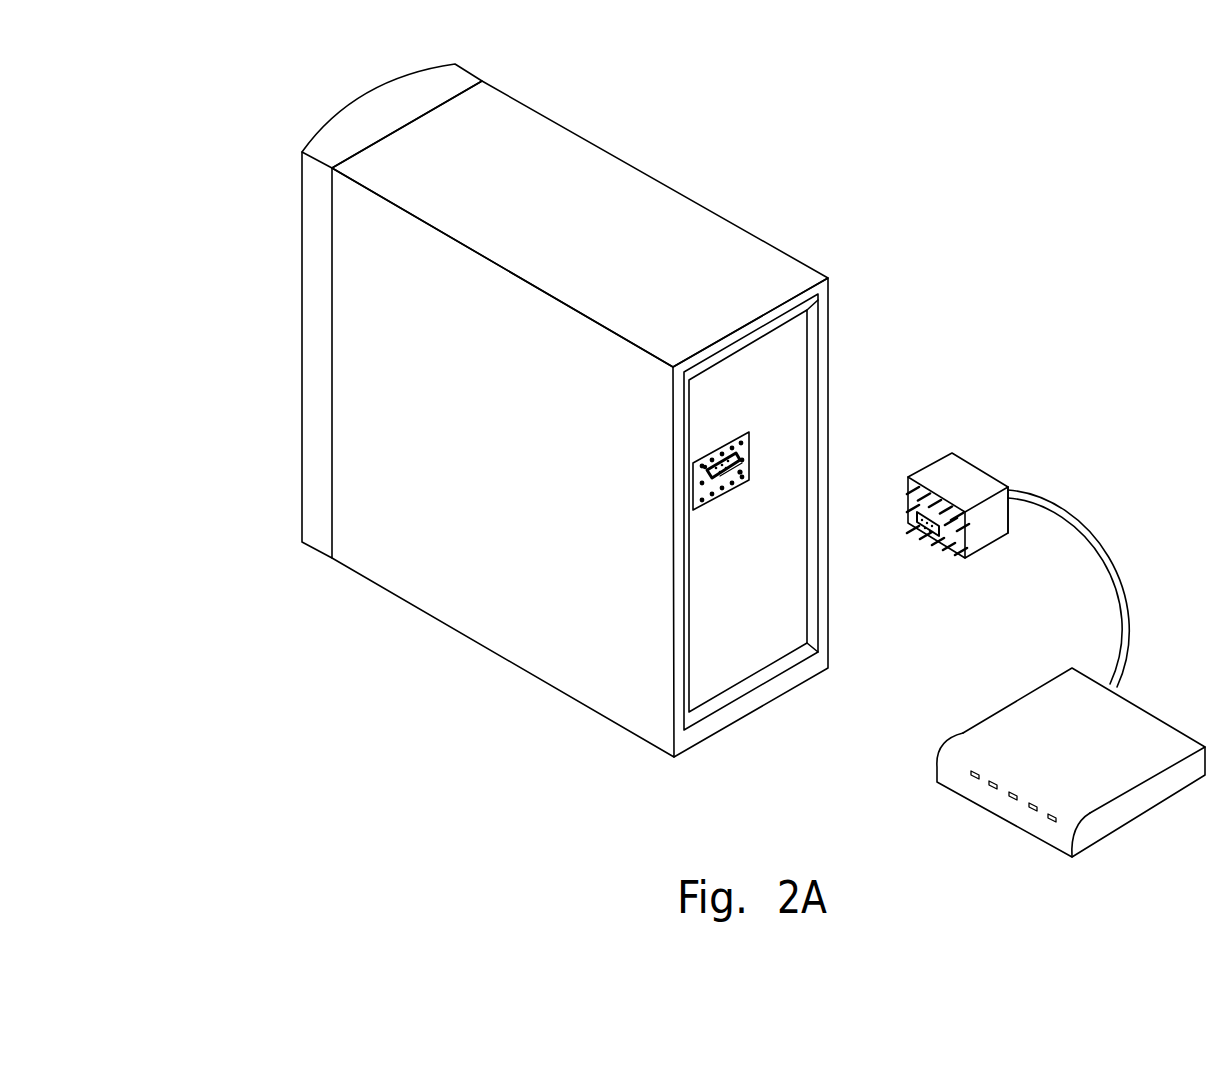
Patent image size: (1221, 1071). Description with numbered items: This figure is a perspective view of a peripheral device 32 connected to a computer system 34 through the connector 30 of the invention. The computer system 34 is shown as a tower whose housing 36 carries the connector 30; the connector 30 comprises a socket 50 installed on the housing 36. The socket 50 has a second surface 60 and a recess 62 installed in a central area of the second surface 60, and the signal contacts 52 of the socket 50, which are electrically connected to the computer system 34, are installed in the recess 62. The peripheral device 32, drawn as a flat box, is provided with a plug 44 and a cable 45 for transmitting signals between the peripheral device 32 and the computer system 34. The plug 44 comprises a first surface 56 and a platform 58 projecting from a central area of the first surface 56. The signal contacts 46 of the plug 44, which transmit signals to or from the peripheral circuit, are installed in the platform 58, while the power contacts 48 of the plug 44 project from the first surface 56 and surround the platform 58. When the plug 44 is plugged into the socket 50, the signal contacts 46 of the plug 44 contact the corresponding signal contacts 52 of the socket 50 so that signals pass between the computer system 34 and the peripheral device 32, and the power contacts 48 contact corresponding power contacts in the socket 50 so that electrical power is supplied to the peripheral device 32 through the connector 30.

The connector 30 is at (565, 410).
The peripheral device 32 is at (1132, 802).
The computer system 34 is at (1031, 527).
The housing 36 is at (613, 197).
The plug 44 is at (971, 510).
The cable 45 is at (1102, 567).
The signal contacts 46 is at (922, 535).
The power contacts 48 is at (945, 553).
The socket 50 is at (710, 457).
The signal contacts 52 is at (732, 488).
The first surface 56 is at (908, 488).
The platform 58 is at (953, 525).
The second surface 60 is at (742, 441).
The recess 62 is at (742, 472).